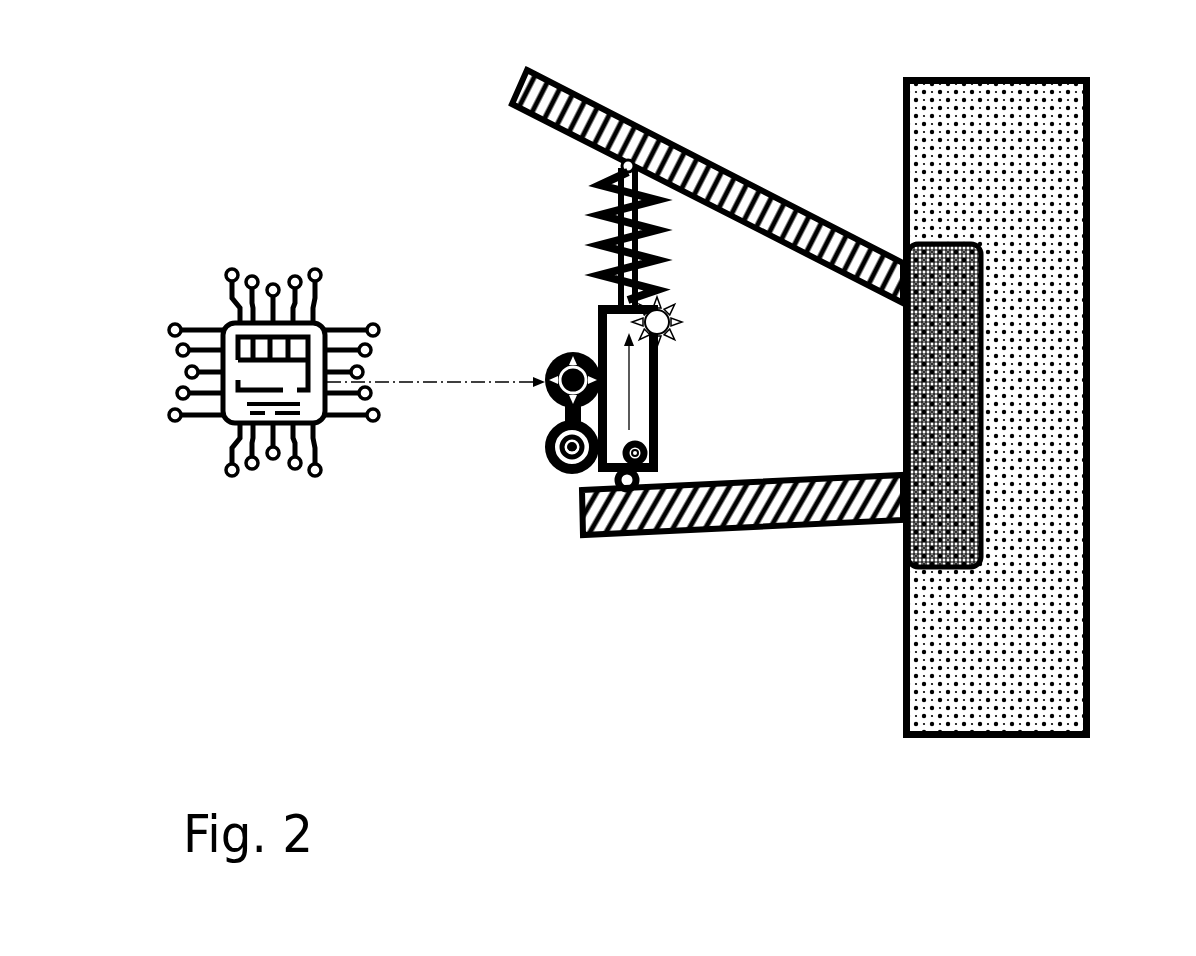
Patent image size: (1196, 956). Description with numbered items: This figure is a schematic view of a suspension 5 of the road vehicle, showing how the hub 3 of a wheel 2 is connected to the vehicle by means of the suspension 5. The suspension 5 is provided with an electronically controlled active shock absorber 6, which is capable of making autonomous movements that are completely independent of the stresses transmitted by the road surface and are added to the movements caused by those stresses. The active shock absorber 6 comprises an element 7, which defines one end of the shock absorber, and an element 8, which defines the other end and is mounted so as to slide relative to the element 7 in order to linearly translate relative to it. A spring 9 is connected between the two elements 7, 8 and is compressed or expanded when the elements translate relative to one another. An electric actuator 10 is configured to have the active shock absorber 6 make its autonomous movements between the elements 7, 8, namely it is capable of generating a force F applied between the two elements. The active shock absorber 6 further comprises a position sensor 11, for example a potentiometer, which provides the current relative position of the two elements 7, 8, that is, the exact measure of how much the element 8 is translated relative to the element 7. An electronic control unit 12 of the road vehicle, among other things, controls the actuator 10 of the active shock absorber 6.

The wheel 2 is at (1012, 112).
The hub 3 is at (947, 453).
The suspension 5 is at (707, 696).
The active shock absorber 6 is at (730, 327).
The element 7 is at (657, 375).
The element 8 is at (617, 235).
The spring 9 is at (607, 248).
The electric actuator 10 is at (551, 355).
The position sensor 11 is at (676, 312).
The electronic control unit 12 is at (268, 392).
The force F is at (631, 418).